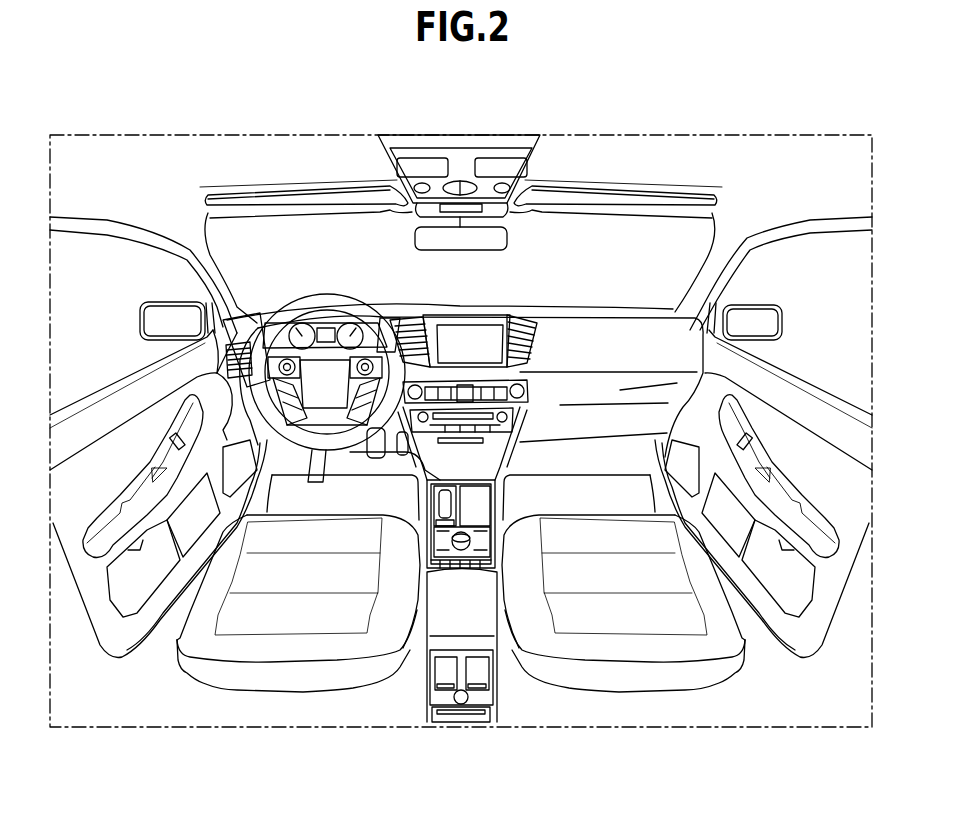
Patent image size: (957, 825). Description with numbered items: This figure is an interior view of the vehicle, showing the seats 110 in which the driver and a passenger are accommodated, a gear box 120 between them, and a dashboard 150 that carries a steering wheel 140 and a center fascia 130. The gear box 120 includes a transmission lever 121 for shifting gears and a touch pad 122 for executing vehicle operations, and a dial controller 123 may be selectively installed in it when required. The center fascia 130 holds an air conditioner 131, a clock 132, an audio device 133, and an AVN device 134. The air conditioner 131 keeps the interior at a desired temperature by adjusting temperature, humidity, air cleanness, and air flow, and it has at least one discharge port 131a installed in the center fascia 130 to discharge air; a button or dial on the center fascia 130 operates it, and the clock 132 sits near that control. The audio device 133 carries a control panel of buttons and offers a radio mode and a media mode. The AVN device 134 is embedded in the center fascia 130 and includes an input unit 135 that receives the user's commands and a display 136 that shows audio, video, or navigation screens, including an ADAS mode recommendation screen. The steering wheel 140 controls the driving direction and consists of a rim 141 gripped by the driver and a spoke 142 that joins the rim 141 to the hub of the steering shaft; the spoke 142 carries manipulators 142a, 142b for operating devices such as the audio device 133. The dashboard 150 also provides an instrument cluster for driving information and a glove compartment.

The seat 110 is at (283, 673).
The gear box 120 is at (497, 524).
The transmission lever 121 is at (427, 488).
The touch pad 122 is at (478, 495).
The dial controller 123 is at (435, 532).
The center fascia 130 is at (519, 423).
The air conditioner 131 is at (525, 393).
The discharge port 131a is at (527, 327).
The clock 132 is at (467, 385).
The audio device 133 is at (525, 415).
The AVN device 134 is at (499, 310).
The input unit 135 is at (466, 312).
The display 136 is at (462, 328).
The steering wheel 140 is at (342, 298).
The rim 141 is at (273, 340).
The spoke 142 is at (217, 377).
The manipulator 142a is at (287, 340).
The manipulator 142b is at (380, 337).
The dashboard 150 is at (617, 309).